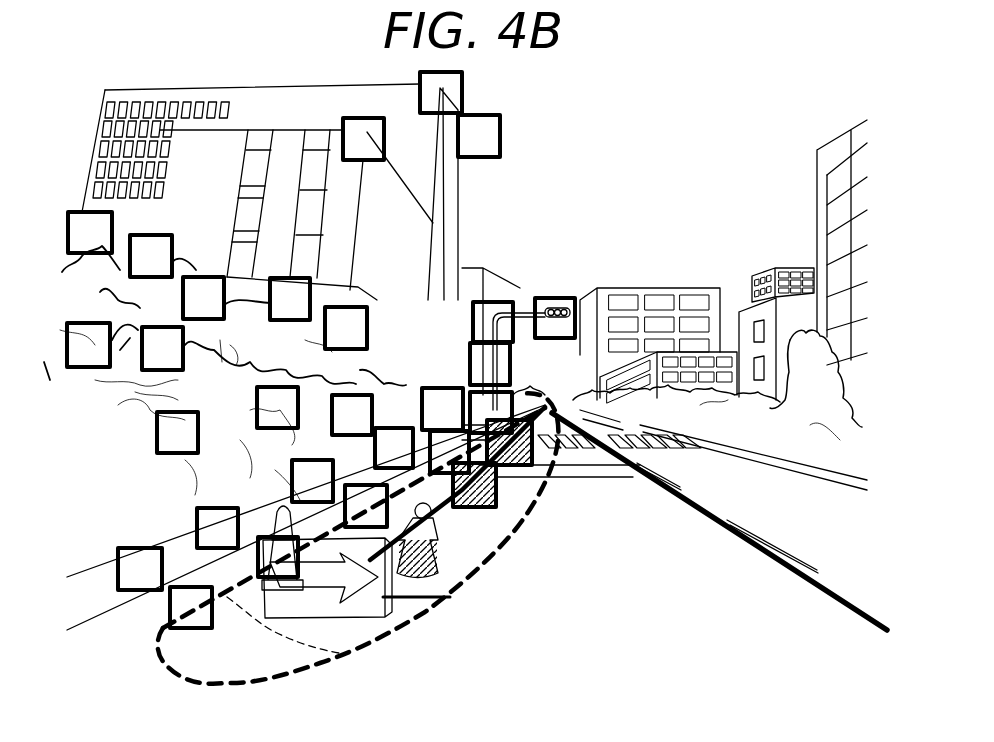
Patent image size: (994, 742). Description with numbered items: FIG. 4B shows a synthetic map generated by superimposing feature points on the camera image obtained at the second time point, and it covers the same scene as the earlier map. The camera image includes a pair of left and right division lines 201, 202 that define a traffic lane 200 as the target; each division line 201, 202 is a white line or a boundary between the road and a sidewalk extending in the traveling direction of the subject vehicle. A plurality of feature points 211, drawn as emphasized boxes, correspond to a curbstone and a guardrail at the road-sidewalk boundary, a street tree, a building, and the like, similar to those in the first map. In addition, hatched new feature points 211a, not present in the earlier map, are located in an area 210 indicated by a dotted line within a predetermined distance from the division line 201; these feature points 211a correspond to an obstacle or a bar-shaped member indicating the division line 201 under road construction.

The traffic lane 200 is at (555, 568).
The division line 201 is at (345, 654).
The division line 202 is at (827, 593).
The area 210 is at (203, 652).
The feature points 211 is at (384, 138).
The new feature points 211a is at (440, 555).